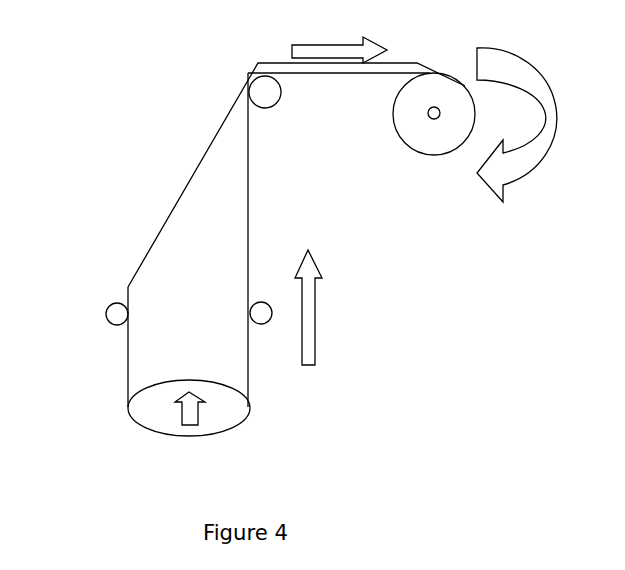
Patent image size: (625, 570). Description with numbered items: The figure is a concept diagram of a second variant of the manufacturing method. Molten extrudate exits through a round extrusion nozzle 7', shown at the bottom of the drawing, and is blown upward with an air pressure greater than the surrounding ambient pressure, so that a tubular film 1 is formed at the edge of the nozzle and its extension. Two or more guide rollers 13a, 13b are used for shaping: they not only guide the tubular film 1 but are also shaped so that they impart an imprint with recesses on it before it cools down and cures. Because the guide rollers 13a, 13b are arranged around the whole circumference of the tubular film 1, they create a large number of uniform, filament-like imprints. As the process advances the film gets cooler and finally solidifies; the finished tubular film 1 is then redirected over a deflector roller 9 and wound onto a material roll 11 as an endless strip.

The tubular film 1 is at (248, 200).
The round extrusion nozzle 7' is at (213, 423).
The deflector roller 9 is at (265, 108).
The material roll 11 is at (404, 142).
The guide roller 13a is at (106, 313).
The guide roller 13b is at (262, 324).